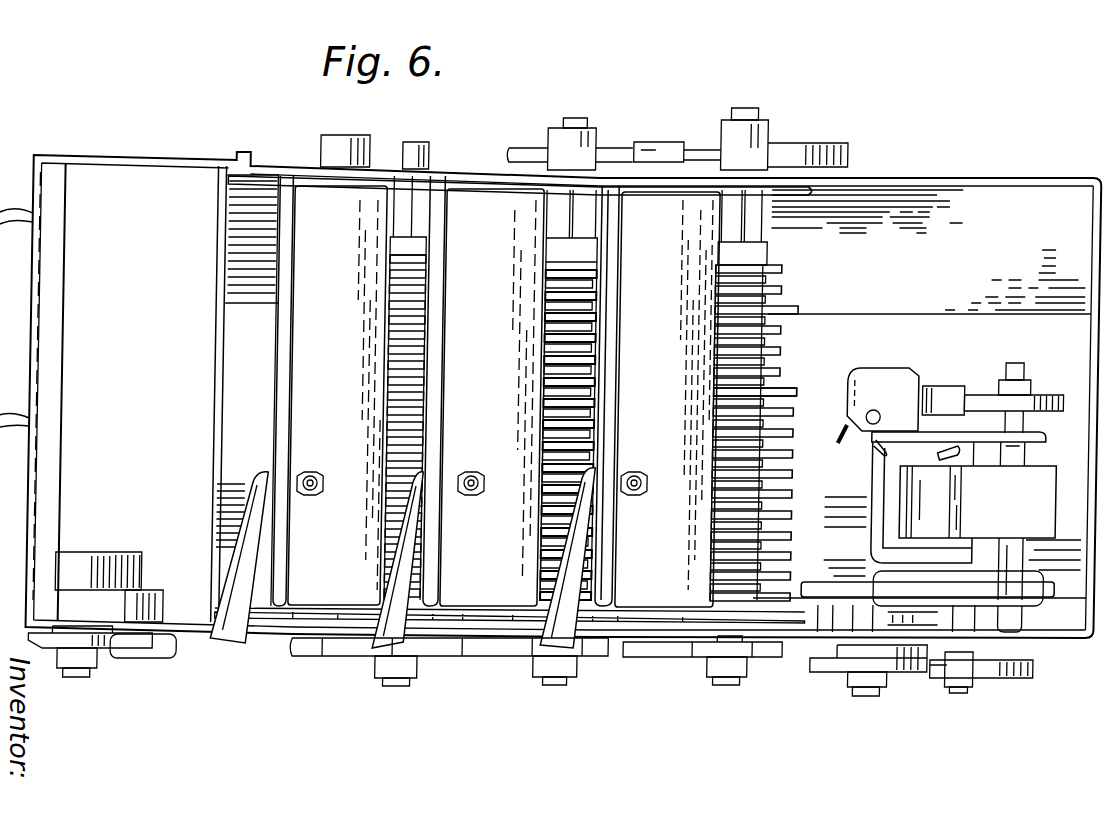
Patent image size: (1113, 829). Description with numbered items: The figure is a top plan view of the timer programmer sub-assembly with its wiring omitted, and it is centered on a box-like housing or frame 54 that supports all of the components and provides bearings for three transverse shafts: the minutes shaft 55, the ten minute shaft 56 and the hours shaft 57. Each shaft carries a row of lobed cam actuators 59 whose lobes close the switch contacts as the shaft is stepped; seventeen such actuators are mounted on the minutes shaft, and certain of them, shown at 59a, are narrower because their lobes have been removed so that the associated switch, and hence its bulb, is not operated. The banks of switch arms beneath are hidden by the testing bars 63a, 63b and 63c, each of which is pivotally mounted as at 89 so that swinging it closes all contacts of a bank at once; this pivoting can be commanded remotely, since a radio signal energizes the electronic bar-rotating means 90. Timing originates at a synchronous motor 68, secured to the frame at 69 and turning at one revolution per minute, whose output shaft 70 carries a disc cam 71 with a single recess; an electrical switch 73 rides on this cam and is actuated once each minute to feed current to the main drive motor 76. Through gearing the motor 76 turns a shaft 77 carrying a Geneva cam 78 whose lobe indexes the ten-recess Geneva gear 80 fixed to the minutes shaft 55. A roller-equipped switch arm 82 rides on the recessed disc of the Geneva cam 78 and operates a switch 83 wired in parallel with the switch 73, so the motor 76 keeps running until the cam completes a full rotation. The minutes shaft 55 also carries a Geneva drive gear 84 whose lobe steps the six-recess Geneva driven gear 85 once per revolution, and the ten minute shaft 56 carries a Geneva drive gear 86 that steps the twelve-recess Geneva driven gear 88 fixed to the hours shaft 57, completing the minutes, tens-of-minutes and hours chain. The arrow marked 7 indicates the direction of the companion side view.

The frame 54 is at (1012, 174).
The minutes shaft 55 is at (757, 117).
The ten minute shaft 56 is at (573, 126).
The hours shaft 57 is at (428, 150).
The cam actuator 59 is at (784, 268).
The narrower actuator 59a is at (786, 356).
The testing bar 63a is at (688, 366).
The testing bar 63b is at (492, 397).
The testing bar 63c is at (337, 395).
The synchronous motor 68 is at (110, 548).
The motor mounting 69 is at (160, 604).
The output shaft 70 is at (88, 678).
The disc cam 71 is at (108, 650).
The electrical switch 73 is at (172, 658).
The main drive motor 76 is at (907, 374).
The shaft 77 is at (870, 695).
The Geneva cam 78 is at (846, 674).
The Geneva gear 80 is at (774, 660).
The roller-equipped switch arm 82 is at (950, 682).
The switch 83 is at (1000, 682).
The Geneva drive gear 84 is at (800, 146).
The Geneva driven gear 85 is at (600, 150).
The Geneva drive gear 86 is at (596, 660).
The Geneva driven gear 88 is at (474, 658).
The pivot mounting 89 is at (338, 184).
The bar-rotating means 90 is at (320, 150).
The viewing direction of FIG. 7 is at (650, 680).